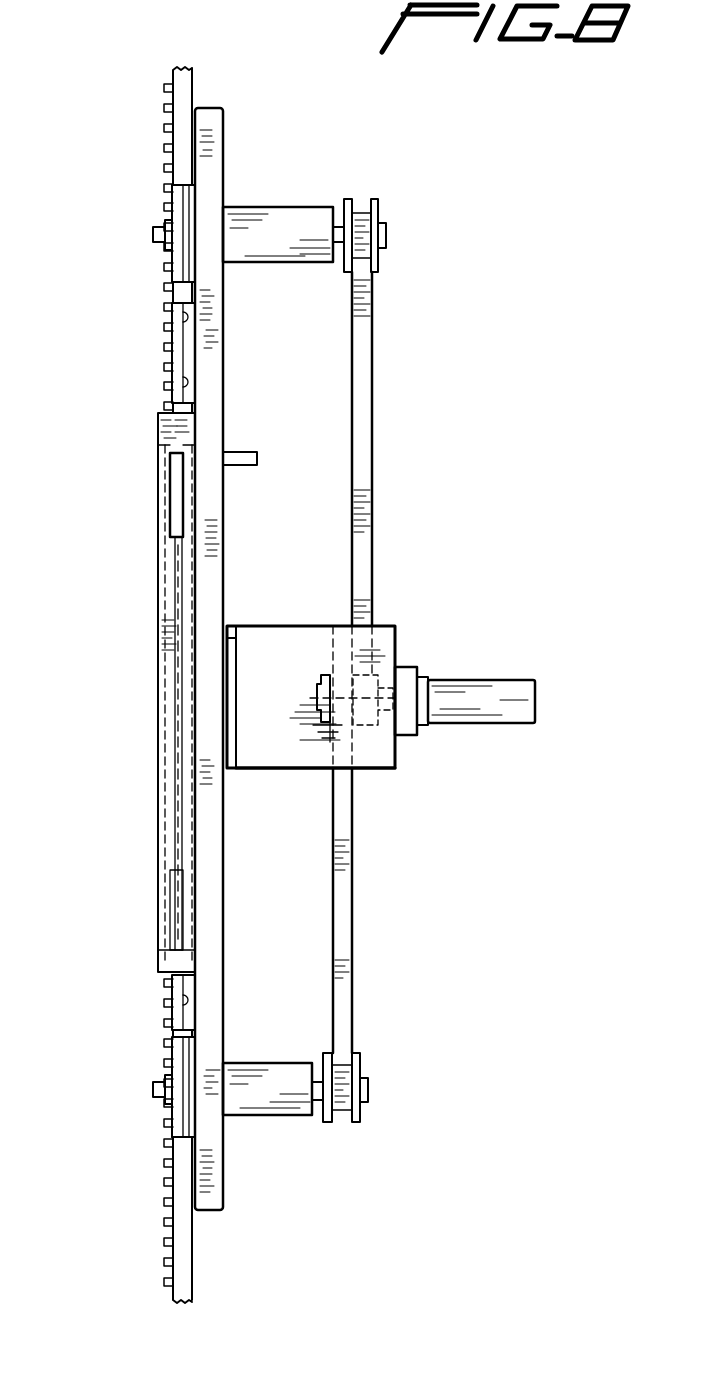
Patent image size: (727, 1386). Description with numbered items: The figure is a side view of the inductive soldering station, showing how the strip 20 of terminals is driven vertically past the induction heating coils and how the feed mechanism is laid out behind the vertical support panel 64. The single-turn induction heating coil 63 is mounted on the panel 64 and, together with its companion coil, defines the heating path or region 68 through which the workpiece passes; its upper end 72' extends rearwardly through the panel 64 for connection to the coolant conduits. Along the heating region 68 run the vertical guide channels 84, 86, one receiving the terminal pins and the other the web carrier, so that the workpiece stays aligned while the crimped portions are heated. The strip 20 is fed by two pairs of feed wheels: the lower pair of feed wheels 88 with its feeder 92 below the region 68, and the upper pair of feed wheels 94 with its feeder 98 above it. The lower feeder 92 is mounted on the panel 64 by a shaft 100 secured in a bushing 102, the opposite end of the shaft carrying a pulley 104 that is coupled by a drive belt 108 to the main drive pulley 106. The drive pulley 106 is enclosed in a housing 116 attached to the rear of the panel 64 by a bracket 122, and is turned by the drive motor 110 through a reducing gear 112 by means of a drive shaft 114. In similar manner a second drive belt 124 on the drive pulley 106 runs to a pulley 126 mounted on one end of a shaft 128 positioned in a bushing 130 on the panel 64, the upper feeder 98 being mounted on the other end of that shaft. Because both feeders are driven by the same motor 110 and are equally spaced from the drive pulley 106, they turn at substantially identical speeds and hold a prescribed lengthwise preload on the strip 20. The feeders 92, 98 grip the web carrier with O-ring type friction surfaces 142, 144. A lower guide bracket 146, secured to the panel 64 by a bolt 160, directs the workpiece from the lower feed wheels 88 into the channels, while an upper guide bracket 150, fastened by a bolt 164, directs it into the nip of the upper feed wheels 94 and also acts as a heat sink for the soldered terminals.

The strip of terminals 20 is at (175, 93).
The upper feeder 98 is at (172, 185).
The O-ring type friction surface 144 is at (165, 207).
The upper pair of feed wheels 94 is at (146, 248).
The bolt 164 is at (168, 317).
The upper guide bracket 150 is at (180, 350).
The end of coil 72' is at (268, 423).
The induction heating coil 63 is at (175, 505).
The vertical support panel 64 is at (213, 530).
The drive belt 124 is at (372, 505).
The bracket 122 is at (253, 626).
The vertical guide channel 84 is at (158, 612).
The vertical guide channel 86 is at (188, 662).
The drive shaft 114 is at (318, 693).
The reducing gear 112 is at (428, 677).
The drive motor 110 is at (515, 690).
The main drive pulley 106 is at (330, 722).
The housing 116 is at (375, 768).
The drive belt 108 is at (343, 922).
The heating path or region 68 is at (168, 898).
The lower guide bracket 146 is at (180, 998).
The bolt 160 is at (180, 1010).
The lower pair of feed wheels 88 is at (146, 1085).
The shaft 100 is at (370, 1088).
The O-ring type friction surface 142 is at (160, 1100).
The lower feeder 92 is at (172, 1137).
The bushing 102 is at (265, 1095).
The pulley 104 is at (360, 1122).
The bushing 130 is at (287, 212).
The pulley 126 is at (375, 208).
The shaft 128 is at (386, 238).